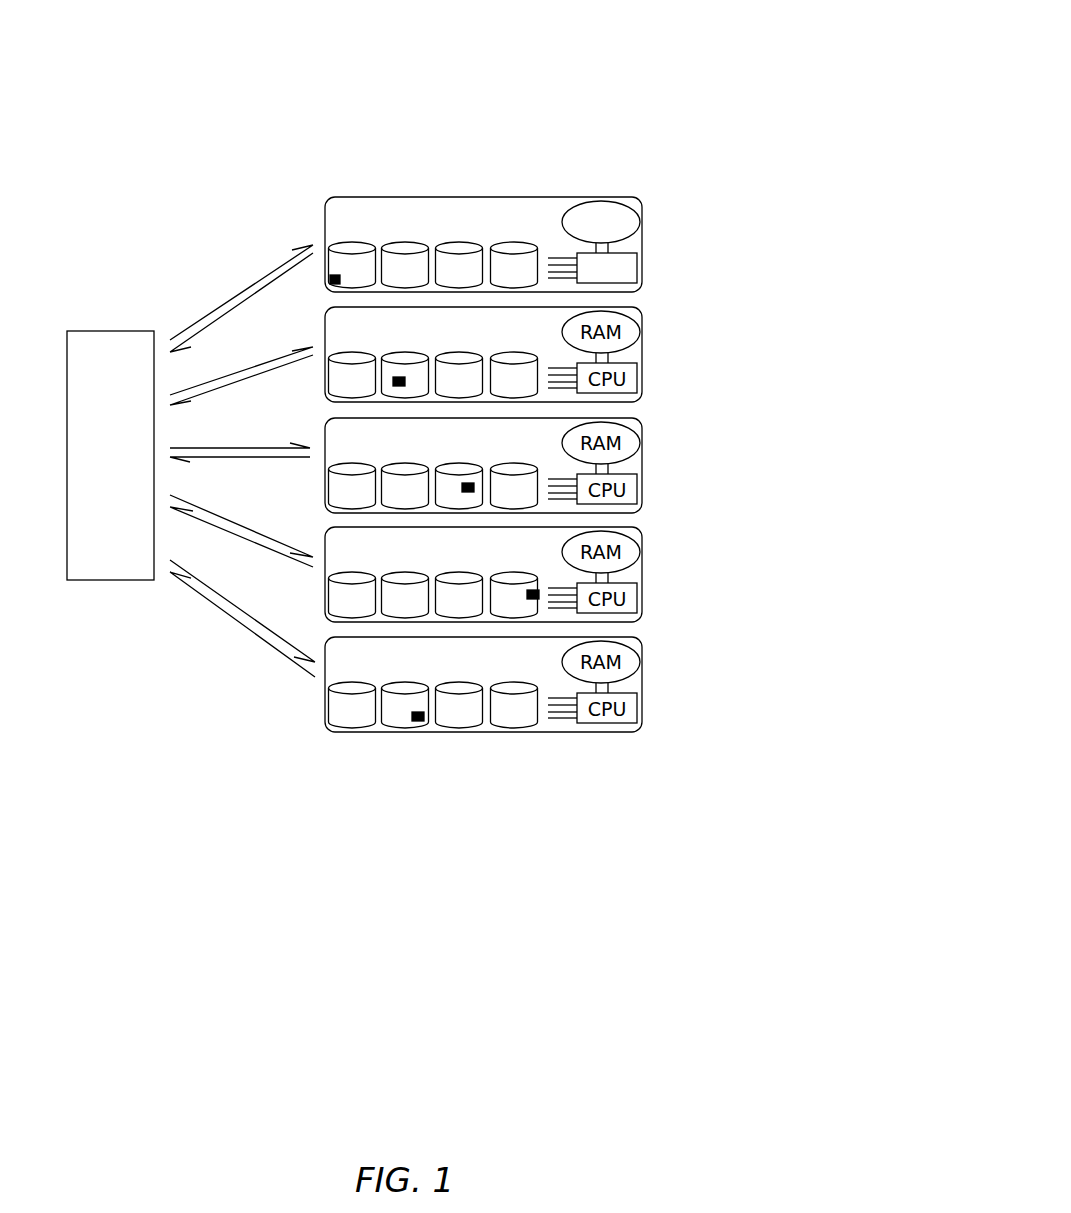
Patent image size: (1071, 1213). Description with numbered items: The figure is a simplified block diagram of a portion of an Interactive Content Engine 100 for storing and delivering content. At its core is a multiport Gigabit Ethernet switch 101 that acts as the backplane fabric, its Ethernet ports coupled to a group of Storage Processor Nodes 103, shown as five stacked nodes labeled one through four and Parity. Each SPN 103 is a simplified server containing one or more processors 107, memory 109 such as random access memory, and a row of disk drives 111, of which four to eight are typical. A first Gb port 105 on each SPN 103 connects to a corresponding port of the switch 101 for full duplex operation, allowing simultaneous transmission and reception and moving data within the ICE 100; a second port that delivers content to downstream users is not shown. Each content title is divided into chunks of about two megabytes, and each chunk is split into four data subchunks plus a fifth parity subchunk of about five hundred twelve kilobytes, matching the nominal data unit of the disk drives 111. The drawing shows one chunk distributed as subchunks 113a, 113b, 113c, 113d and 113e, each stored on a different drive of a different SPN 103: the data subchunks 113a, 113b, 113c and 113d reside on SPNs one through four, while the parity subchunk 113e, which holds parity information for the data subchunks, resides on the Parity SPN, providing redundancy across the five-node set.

The Interactive Content Engine (ICE) 100 is at (713, 58).
The Gigabit Ethernet switch 101 is at (96, 455).
The Storage Processor Node (SPN) 103 is at (496, 135).
The first Gb port 105 is at (309, 229).
The processor 107 is at (640, 266).
The memory 109 is at (618, 200).
The disk drive 111 is at (438, 245).
The subchunk 113a is at (335, 282).
The subchunk 113b is at (395, 386).
The subchunk 113c is at (468, 492).
The subchunk 113d is at (533, 598).
The parity subchunk 113e is at (418, 720).